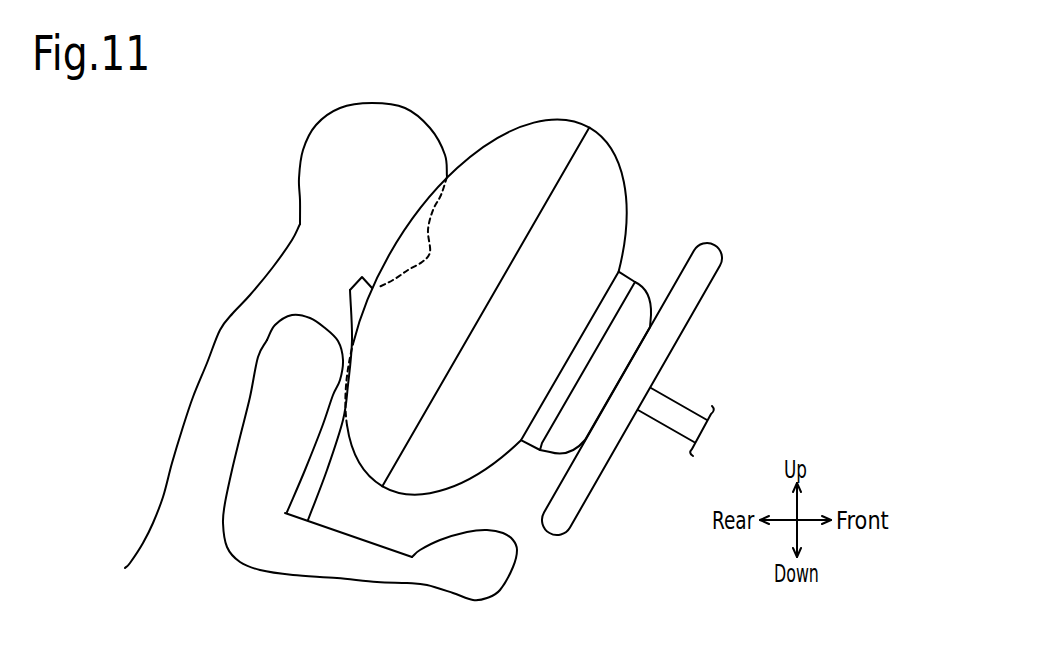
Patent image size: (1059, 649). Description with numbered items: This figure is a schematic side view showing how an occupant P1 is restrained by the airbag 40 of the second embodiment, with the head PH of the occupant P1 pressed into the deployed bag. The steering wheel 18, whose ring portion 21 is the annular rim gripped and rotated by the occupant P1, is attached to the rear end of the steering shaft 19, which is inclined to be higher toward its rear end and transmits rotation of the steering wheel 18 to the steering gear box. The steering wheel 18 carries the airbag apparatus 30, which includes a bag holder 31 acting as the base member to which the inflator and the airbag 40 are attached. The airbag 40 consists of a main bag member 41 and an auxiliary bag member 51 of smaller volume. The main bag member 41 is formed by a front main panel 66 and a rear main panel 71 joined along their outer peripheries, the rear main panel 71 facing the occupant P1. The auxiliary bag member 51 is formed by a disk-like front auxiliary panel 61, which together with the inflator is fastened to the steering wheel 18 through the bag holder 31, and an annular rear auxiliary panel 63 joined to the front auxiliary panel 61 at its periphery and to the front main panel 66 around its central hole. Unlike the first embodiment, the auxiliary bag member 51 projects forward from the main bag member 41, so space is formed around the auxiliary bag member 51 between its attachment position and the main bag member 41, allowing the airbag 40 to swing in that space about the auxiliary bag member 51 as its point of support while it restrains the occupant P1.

The airbag 40 is at (547, 262).
The airbag apparatus 30 is at (547, 262).
The main bag member 41 is at (490, 262).
The rear main panel 71 is at (562, 123).
The front main panel 66 is at (597, 143).
The auxiliary bag member 51 is at (616, 310).
The rear auxiliary panel 63 is at (627, 268).
The front auxiliary panel 61 is at (648, 290).
The ring portion 21 is at (706, 376).
The steering wheel 18 is at (706, 376).
The bag holder 31 is at (712, 246).
The steering shaft 19 is at (680, 404).
The head of occupant PH is at (305, 146).
The occupant P1 is at (321, 351).